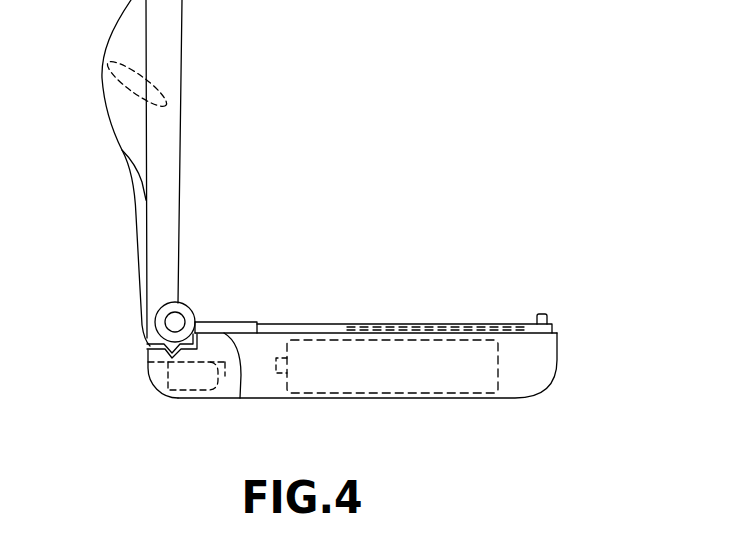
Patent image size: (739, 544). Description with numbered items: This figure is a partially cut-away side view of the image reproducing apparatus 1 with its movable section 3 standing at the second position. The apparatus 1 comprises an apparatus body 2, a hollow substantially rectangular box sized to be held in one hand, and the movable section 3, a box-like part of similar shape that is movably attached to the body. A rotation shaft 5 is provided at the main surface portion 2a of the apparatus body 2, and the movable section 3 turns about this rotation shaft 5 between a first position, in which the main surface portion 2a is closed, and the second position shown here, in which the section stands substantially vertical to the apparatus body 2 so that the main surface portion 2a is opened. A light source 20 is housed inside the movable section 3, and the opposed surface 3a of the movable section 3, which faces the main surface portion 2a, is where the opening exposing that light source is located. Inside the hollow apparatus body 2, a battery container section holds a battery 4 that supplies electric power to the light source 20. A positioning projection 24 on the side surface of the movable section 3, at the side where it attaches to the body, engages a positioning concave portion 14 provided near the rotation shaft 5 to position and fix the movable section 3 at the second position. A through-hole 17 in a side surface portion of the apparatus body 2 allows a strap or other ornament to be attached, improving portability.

The image reproducing apparatus 1 is at (410, 277).
The apparatus body 2 is at (265, 392).
The main surface portion of the apparatus body 2a is at (260, 312).
The movable section 3 is at (106, 126).
The opposed surface of the movable section 3a is at (188, 170).
The battery 4 is at (397, 392).
The rotation shaft 5 is at (181, 318).
The positioning concave portion 14 is at (177, 390).
The through-hole 17 is at (212, 388).
The light source 20 is at (104, 61).
The positioning projection 24 is at (142, 337).